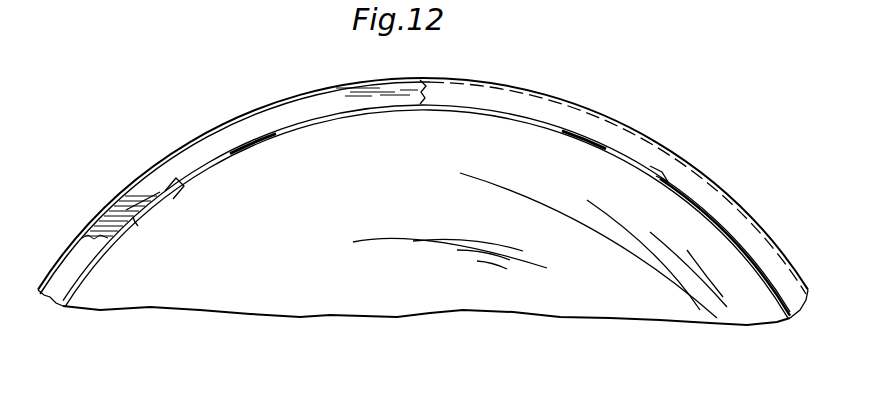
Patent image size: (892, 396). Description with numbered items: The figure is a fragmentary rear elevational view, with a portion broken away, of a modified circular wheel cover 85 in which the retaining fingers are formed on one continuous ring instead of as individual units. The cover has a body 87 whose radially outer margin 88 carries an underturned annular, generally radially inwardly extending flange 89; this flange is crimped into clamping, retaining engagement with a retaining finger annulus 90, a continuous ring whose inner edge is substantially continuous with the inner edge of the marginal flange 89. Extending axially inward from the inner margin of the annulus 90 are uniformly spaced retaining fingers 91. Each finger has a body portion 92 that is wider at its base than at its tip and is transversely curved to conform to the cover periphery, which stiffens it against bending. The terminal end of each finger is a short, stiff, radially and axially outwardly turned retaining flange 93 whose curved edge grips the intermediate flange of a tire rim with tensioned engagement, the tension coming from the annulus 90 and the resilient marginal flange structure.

The circular wheel cover 85 is at (190, 130).
The body 87 is at (213, 302).
The radially outer margin 88 is at (133, 218).
The underturned marginal flange 89 is at (233, 163).
The retaining finger annulus 90 is at (152, 182).
The retaining fingers 91 is at (203, 175).
The finger body portion 92 is at (173, 187).
The retaining finger flange 93 is at (227, 150).